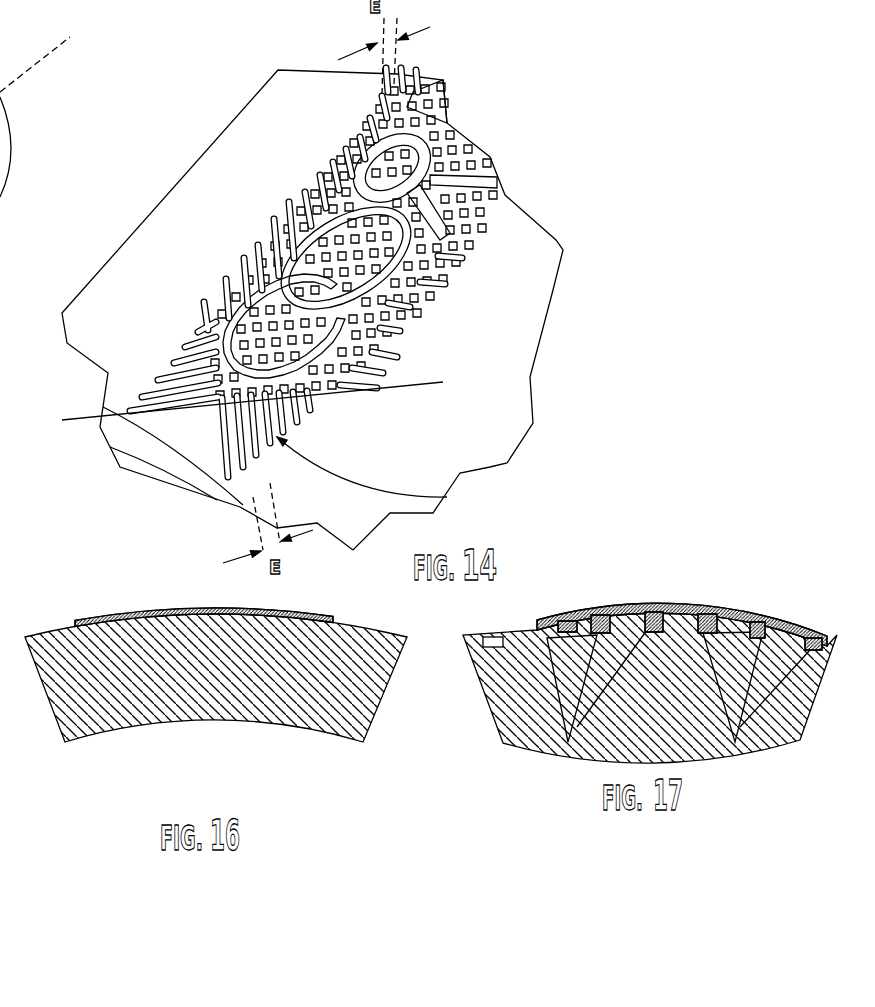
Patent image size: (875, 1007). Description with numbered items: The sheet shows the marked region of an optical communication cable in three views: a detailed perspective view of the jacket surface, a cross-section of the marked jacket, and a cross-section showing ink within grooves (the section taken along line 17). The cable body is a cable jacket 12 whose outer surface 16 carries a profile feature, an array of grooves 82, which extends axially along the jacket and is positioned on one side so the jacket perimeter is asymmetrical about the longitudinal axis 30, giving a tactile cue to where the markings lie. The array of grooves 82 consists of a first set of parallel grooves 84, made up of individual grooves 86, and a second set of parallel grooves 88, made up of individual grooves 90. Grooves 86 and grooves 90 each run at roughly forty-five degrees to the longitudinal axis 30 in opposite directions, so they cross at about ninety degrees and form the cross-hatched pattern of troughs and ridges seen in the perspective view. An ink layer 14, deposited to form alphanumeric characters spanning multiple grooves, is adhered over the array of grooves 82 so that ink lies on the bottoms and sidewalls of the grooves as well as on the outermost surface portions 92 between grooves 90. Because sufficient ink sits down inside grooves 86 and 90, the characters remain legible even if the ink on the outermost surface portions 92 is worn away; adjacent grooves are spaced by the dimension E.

In FIG. 16, the cable jacket 12 is at (355, 723).
In FIG. 16, the ink layer 14 is at (180, 603).
In FIG. 17, the ink layer 14 is at (678, 606).
In FIG. 14, the outer surface 16 is at (548, 242).
In FIG. 14, the section line 17- 17 is at (443, 343).
In FIG. 14, the longitudinal axis 30 is at (17, 78).
In FIG. 14, the array of grooves 82 is at (488, 135).
In FIG. 14, the first set of parallel grooves 84 is at (190, 392).
In FIG. 14, the grooves 86 is at (385, 378).
In FIG. 14, the second set of parallel grooves 88 is at (447, 497).
In FIG. 14, the grooves 90 is at (226, 282).
In FIG. 17, the grooves 90 is at (735, 742).
In FIG. 17, the outermost surface portions 92 is at (794, 623).